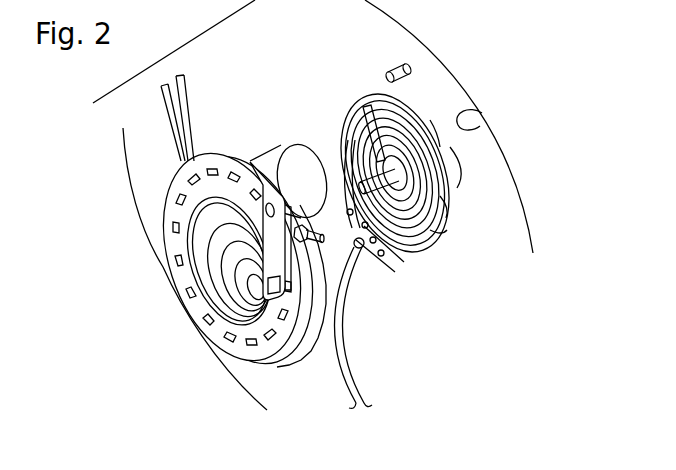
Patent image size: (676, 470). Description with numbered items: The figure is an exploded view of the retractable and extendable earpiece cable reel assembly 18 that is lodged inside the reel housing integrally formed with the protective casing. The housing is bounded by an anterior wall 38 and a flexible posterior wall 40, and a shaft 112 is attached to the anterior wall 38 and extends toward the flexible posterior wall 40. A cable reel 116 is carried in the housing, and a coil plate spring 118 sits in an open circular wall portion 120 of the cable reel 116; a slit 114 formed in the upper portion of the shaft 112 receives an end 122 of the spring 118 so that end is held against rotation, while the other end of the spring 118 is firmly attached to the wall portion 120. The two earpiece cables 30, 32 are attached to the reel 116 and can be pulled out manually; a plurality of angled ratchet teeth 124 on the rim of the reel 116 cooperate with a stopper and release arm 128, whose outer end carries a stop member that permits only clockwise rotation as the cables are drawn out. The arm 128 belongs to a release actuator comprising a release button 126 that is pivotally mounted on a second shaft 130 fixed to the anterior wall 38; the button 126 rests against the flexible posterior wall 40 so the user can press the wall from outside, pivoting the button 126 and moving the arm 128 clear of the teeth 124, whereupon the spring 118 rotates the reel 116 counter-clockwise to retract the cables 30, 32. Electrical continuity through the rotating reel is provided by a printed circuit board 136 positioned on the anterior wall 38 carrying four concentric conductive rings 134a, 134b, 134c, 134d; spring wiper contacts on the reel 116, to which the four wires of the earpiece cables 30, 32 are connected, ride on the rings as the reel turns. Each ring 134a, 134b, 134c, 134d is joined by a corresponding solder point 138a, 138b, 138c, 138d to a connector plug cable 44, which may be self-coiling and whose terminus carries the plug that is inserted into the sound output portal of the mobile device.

The earpiece cable reel assembly 18 is at (203, 33).
The earpiece cable 30 is at (167, 110).
The earpiece cable 32 is at (188, 100).
The anterior wall 38 is at (482, 113).
The flexible posterior wall 40 is at (143, 203).
The connector plug cable 44 is at (357, 373).
The shaft 112 is at (353, 165).
The slit 114 is at (353, 212).
The cable reel 116 is at (203, 257).
The coil plate spring 118 is at (233, 297).
The open circular wall portion 120 is at (237, 313).
The end of spring 122 is at (207, 250).
The angled ratchet teeth 124 is at (250, 273).
The release button 126 is at (282, 160).
The stopper and release arm 128 is at (298, 242).
The shaft 130 is at (414, 81).
The conductive ring 134a is at (447, 230).
The conductive ring 134b is at (443, 200).
The conductive ring 134c is at (380, 138).
The conductive ring 134d is at (365, 118).
The printed circuit board 136 is at (460, 177).
The solder point 138a is at (361, 250).
The solder point 138b is at (386, 257).
The solder point 138c is at (383, 252).
The solder point 138d is at (395, 243).